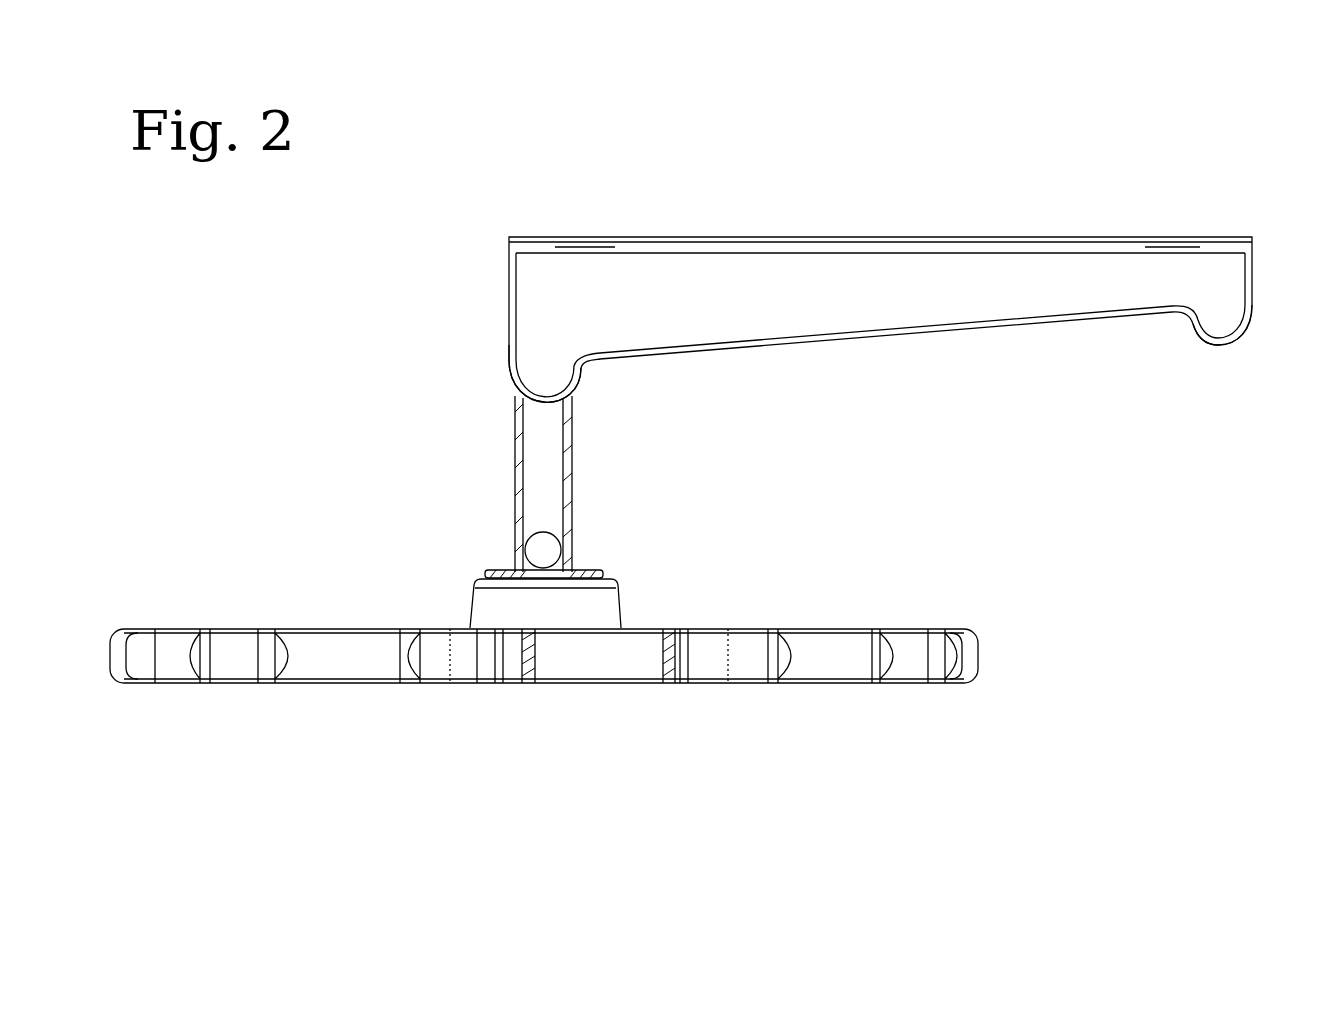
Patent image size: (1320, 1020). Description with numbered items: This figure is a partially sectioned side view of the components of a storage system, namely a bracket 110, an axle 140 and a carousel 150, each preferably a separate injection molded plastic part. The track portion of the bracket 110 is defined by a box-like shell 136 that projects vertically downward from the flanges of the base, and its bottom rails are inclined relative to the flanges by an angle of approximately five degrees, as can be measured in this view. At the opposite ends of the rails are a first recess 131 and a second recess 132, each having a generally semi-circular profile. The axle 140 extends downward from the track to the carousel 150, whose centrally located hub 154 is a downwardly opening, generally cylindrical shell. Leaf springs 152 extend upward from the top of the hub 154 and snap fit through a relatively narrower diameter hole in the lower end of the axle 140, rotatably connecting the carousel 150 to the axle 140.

The bracket 110 is at (1120, 230).
The shell 136 is at (890, 275).
The first recess 131 is at (545, 364).
The second recess 132 is at (1214, 322).
The axle 140 is at (555, 440).
The leaf springs 152 is at (540, 552).
The hub 154 is at (605, 606).
The carousel 150 is at (908, 692).